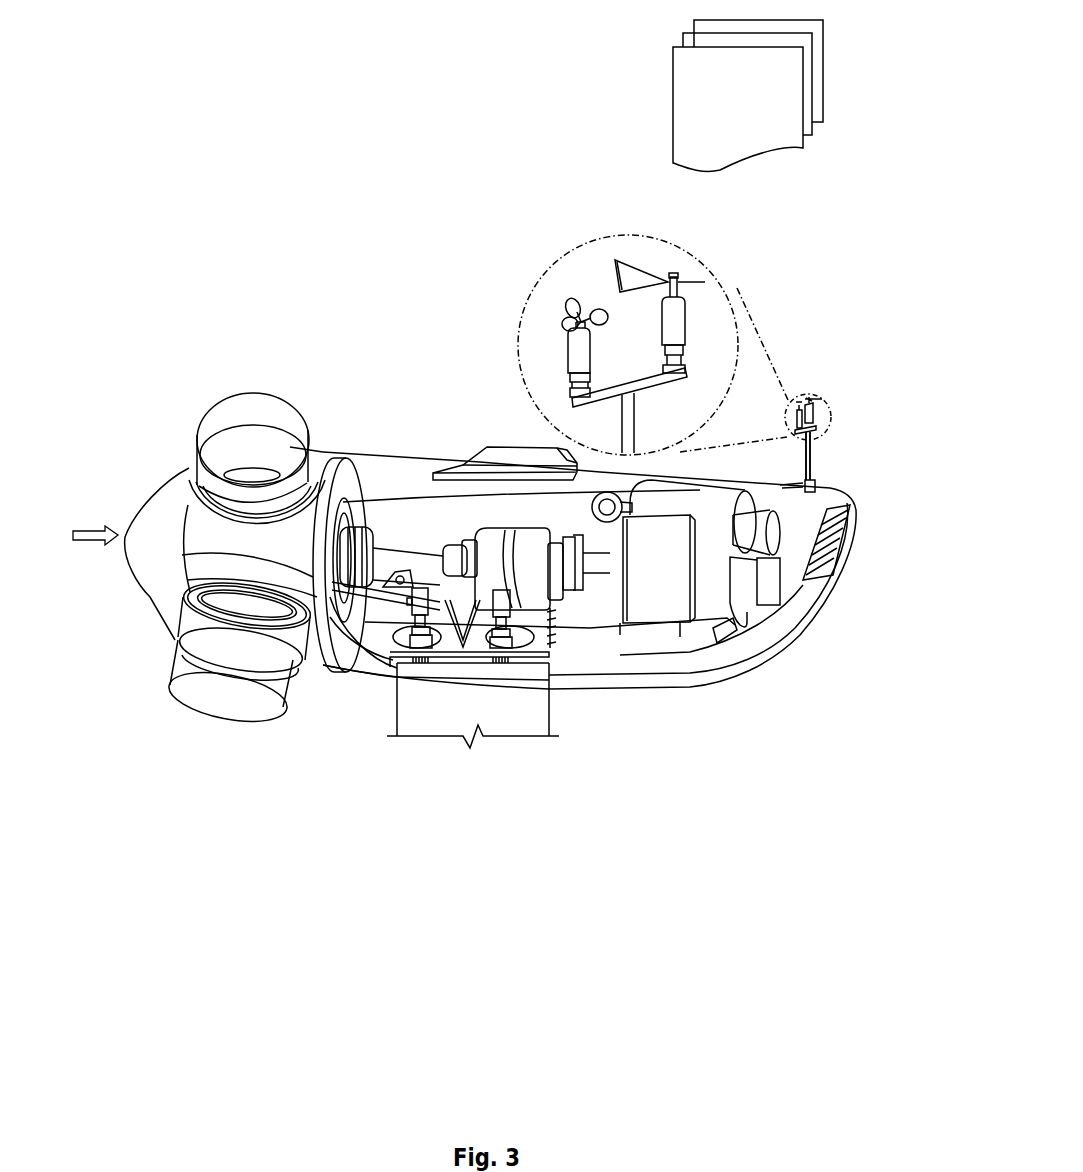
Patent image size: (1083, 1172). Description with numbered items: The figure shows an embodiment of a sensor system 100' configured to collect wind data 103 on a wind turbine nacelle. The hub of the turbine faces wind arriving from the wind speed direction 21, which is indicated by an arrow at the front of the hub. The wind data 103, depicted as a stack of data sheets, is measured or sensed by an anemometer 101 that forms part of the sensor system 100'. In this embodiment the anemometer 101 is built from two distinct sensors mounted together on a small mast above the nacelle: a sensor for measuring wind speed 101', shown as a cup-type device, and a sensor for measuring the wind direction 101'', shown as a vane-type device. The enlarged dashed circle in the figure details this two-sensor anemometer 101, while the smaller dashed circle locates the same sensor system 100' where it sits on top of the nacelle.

The wind speed direction 21 is at (92, 527).
The wind data 103 is at (710, 98).
The sensor system 100' is at (665, 289).
The anemometer 101 is at (671, 320).
The sensor for measuring wind speed 101' is at (524, 353).
The sensor for measuring the wind direction 101'' is at (737, 316).